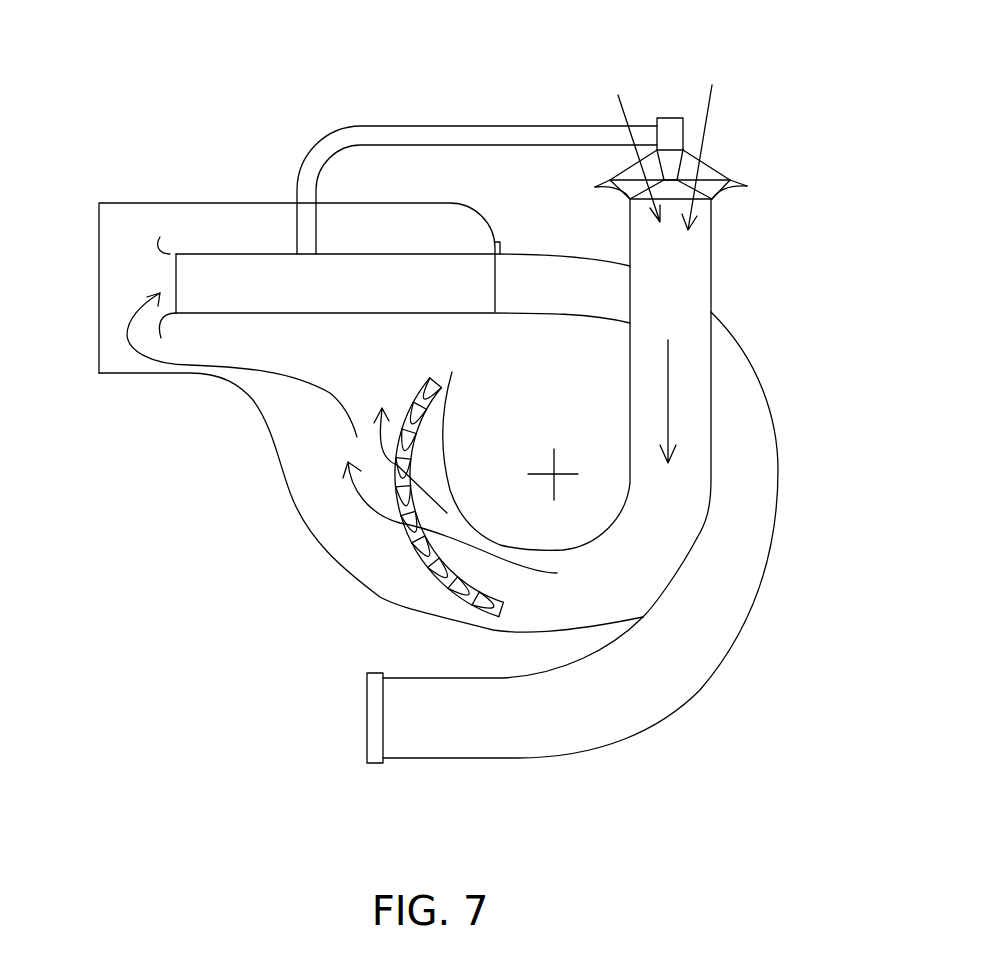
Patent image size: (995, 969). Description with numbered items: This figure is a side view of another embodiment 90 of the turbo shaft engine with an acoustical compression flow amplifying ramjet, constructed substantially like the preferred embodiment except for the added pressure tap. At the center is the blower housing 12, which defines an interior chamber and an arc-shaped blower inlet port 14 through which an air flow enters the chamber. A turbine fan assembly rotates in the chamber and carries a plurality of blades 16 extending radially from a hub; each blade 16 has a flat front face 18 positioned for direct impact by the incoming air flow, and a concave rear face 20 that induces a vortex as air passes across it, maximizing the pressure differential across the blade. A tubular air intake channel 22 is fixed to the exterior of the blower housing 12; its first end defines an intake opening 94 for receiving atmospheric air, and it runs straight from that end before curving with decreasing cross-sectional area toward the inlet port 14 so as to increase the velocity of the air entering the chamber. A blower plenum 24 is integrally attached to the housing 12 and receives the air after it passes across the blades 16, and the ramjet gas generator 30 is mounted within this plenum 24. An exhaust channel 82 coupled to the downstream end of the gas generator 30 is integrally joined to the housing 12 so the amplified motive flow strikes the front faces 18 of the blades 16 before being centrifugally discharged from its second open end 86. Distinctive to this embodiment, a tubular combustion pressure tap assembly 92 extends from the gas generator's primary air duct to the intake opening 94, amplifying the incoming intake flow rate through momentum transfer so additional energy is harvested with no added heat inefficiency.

The turbo shaft engine embodiment 90 is at (106, 81).
The combustion pressure tap assembly 92 is at (430, 126).
The intake opening 94 is at (657, 150).
The tubular air intake channel 22 is at (711, 297).
The exhaust channel 82 is at (777, 465).
The second open end 86 is at (367, 721).
The ramjet gas generator 30 is at (260, 267).
The blower plenum 24 is at (98, 345).
The blower housing 12 is at (400, 522).
The blower inlet port 14 is at (430, 578).
The blade 16 is at (440, 585).
The front face 18 is at (422, 560).
The rear face 20 is at (400, 523).